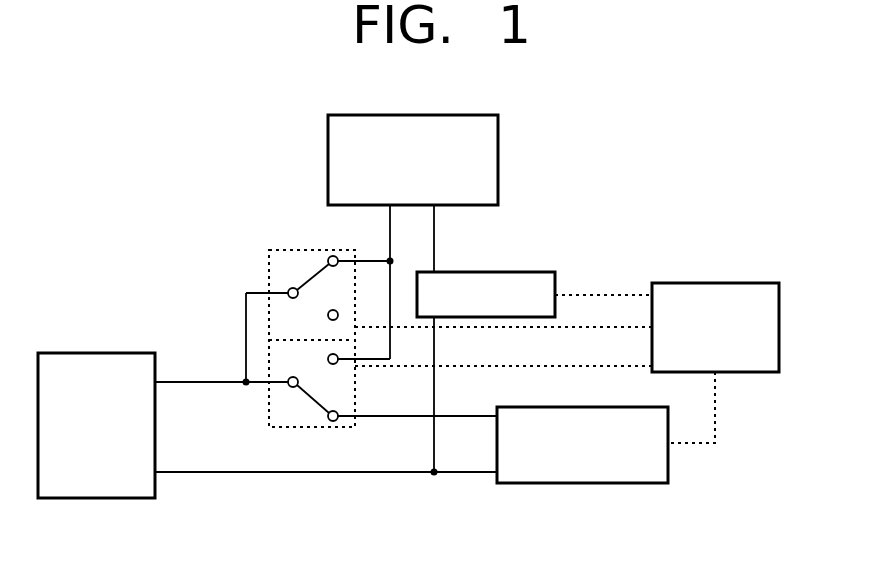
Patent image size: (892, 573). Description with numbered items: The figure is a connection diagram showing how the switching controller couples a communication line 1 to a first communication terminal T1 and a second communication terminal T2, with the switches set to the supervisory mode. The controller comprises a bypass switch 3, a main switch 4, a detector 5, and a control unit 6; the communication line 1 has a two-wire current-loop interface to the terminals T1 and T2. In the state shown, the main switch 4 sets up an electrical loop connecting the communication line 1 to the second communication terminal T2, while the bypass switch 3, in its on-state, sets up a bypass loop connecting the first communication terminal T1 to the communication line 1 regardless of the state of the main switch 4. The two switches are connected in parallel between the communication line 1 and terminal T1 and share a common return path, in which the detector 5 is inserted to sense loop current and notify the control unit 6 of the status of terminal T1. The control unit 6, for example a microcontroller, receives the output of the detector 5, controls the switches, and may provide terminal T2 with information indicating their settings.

The communication line 1 is at (118, 353).
The bypass switch 3 is at (301, 250).
The main switch 4 is at (269, 412).
The detector 5 is at (505, 272).
The control unit 6 is at (725, 283).
The first communication terminal T1 is at (499, 155).
The second communication terminal T2 is at (670, 463).